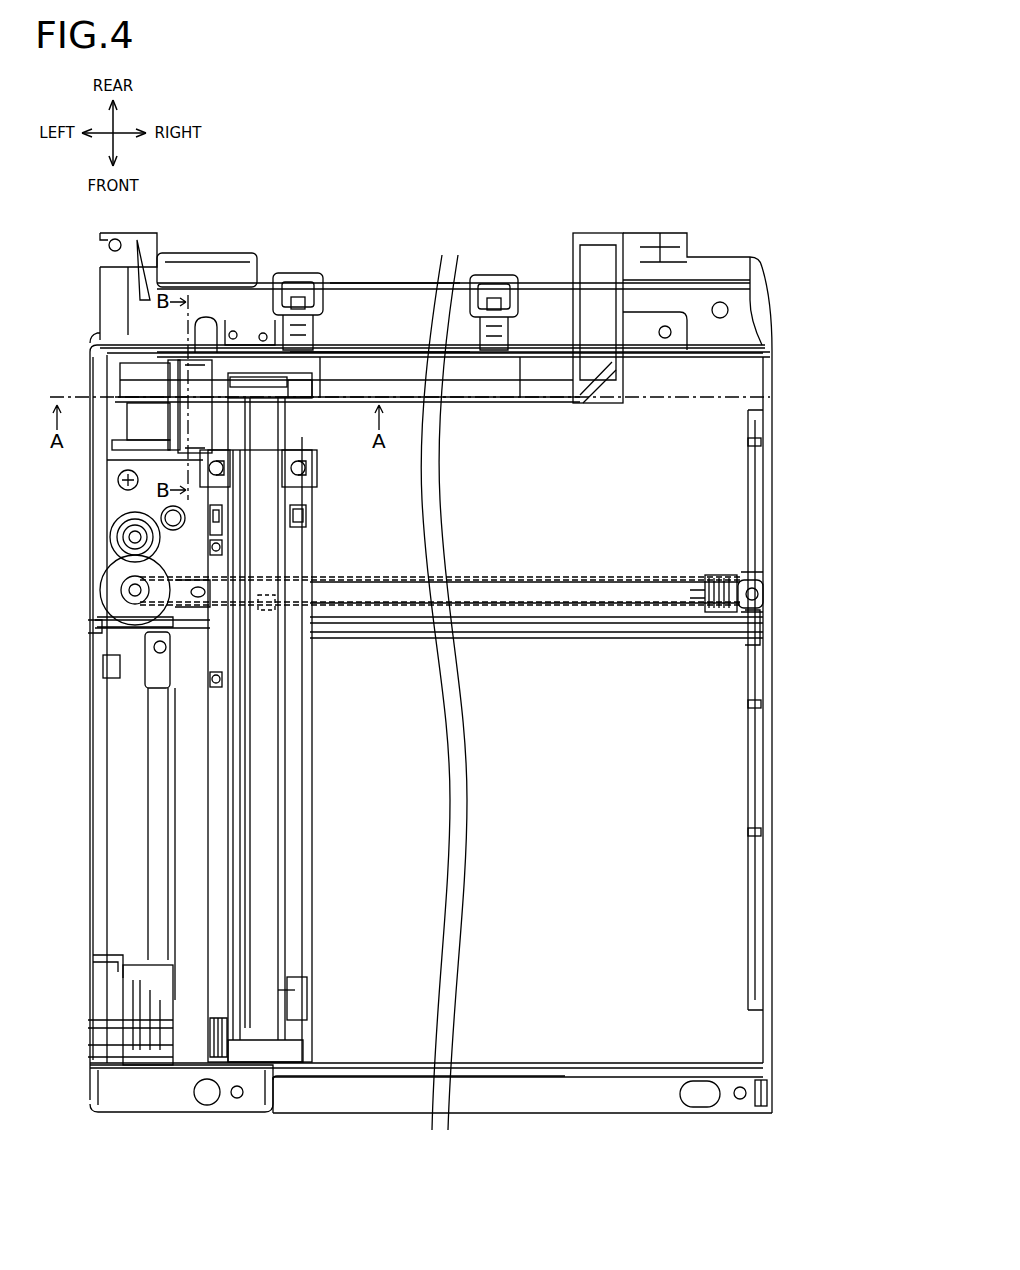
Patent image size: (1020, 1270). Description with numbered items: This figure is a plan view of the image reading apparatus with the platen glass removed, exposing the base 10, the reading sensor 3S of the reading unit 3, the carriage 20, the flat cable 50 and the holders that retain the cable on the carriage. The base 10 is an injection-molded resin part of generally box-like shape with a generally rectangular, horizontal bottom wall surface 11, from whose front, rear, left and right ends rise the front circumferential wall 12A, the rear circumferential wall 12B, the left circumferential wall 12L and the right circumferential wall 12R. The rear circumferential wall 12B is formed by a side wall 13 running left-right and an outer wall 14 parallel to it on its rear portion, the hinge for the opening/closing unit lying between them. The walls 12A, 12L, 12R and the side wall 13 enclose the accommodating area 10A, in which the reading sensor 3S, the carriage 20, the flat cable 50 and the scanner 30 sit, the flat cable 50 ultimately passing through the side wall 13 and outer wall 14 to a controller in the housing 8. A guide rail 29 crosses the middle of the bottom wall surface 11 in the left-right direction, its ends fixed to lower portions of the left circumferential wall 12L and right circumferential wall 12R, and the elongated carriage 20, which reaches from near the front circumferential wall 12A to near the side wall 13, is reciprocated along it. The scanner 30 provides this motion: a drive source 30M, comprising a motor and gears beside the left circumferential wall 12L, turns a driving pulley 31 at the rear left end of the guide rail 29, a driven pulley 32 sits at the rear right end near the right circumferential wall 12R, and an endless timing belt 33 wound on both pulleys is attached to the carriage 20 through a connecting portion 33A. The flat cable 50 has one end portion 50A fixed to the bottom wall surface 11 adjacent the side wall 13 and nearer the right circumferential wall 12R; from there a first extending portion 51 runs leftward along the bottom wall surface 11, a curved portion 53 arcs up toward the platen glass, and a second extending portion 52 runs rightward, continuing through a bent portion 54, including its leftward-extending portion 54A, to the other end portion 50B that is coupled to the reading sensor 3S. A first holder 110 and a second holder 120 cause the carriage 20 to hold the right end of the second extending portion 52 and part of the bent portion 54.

The reading unit 3 is at (688, 962).
The reading sensor 3S is at (253, 937).
The housing 8 is at (137, 1115).
The base 10 is at (633, 1115).
The accommodating area 10A is at (608, 944).
The bottom wall surface 11 is at (697, 743).
The front circumferential wall 12A is at (516, 1073).
The rear circumferential wall 12B is at (405, 211).
The left circumferential wall 12L is at (92, 830).
The right circumferential wall 12R is at (768, 875).
The side wall 13 is at (357, 350).
The outer wall 14 is at (396, 283).
The carriage 20 is at (302, 927).
The guide rail 29 is at (597, 632).
The scanner 30 is at (623, 552).
The drive source 30M is at (97, 577).
The driving pulley 31 is at (113, 625).
The driven pulley 32 is at (755, 580).
The timing belt 33 is at (565, 580).
The connecting portion 33A is at (275, 600).
The flat cable 50 is at (533, 402).
The one end portion 50A is at (583, 403).
The other end portion 50B is at (225, 425).
The first extending portion 51 is at (485, 388).
The second extending portion 52 is at (148, 373).
The curved portion 53 is at (120, 380).
The bent portion 54 is at (157, 428).
The portion of the bent portion 54A is at (145, 420).
The first holder 110 is at (230, 327).
The second holder 120 is at (202, 380).